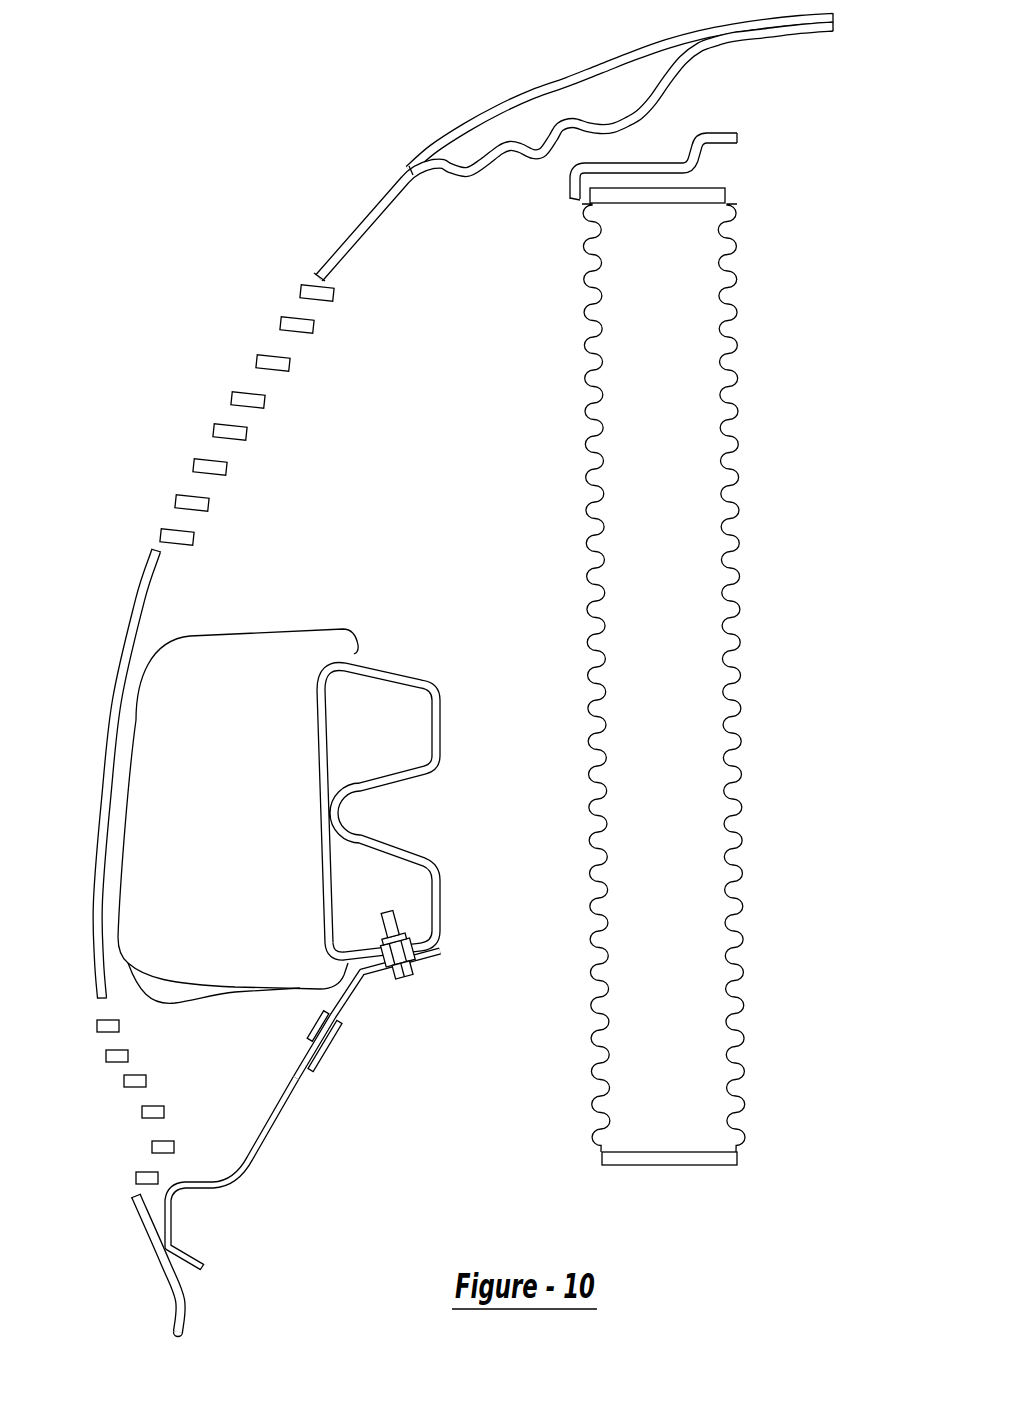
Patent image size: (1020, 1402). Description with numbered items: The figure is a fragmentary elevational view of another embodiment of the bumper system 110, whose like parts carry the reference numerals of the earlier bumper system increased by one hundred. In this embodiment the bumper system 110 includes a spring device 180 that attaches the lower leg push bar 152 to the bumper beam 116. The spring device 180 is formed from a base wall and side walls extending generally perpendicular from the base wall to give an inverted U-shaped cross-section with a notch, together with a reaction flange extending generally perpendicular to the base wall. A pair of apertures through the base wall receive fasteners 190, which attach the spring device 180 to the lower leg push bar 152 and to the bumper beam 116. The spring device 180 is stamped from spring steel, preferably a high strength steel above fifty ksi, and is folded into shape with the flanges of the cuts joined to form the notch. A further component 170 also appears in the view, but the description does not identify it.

The bumper system 110 is at (153, 400).
The bumper beam 116 is at (395, 666).
The lower leg push bar 152 is at (268, 1145).
The fastener 170 is at (408, 982).
The spring device 180 is at (360, 1003).
The fasteners 190 is at (340, 1040).